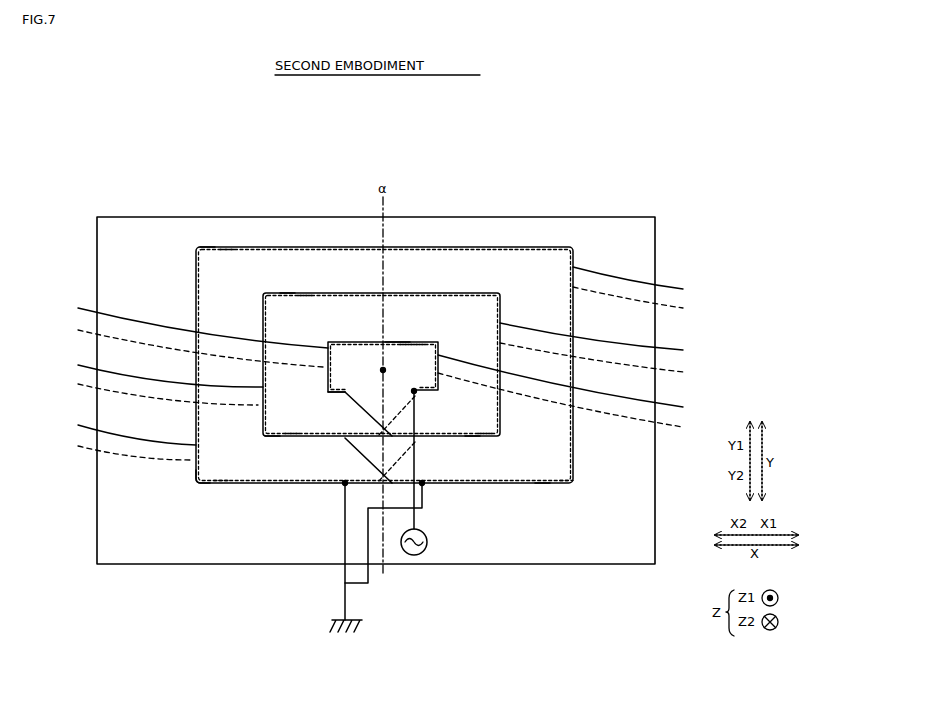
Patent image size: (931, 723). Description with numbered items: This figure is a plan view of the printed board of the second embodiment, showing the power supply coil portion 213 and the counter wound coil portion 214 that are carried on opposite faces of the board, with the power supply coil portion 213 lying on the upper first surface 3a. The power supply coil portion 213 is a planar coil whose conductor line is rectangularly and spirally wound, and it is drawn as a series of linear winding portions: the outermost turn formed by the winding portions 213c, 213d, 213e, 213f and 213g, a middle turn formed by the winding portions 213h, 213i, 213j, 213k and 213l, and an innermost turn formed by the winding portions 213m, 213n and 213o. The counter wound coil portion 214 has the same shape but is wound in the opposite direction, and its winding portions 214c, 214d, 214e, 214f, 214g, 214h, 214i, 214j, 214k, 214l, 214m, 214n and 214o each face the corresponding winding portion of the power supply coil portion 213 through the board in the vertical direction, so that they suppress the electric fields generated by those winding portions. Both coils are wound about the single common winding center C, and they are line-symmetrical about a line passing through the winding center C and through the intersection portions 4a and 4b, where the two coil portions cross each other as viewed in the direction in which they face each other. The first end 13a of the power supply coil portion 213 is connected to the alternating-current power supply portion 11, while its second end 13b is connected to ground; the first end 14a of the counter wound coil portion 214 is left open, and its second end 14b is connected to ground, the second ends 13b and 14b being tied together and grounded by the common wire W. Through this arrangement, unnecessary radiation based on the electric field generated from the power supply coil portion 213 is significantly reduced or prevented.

The first surface 3a is at (619, 232).
The power supply coil portion 213 is at (533, 240).
The counter wound coil portion 214 is at (568, 238).
The winding portion 213e is at (207, 246).
The winding portion 214e is at (228, 247).
The winding portion 213j is at (287, 292).
The winding portion 214j is at (305, 294).
The winding portion 213n is at (398, 342).
The winding portion 214n is at (412, 342).
The first end 14a is at (346, 390).
The first end 13a is at (415, 390).
The winding center C is at (392, 370).
The winding portion 213m is at (181, 323).
The winding portion 214m is at (179, 343).
The winding portion 213i is at (151, 371).
The winding portion 214i is at (149, 391).
The winding portion 213d is at (115, 431).
The winding portion 214d is at (113, 449).
The winding portion 213f is at (644, 281).
The winding portion 214f is at (644, 301).
The winding portion 213k is at (609, 340).
The winding portion 214k is at (609, 361).
The winding portion 213o is at (578, 384).
The winding portion 214o is at (578, 404).
The intersection portion 4a is at (378, 428).
The intersection portion 4b is at (392, 432).
The winding portion 213c is at (200, 486).
The winding portion 214c is at (222, 485).
The winding portion 213h is at (272, 438).
The winding portion 214h is at (293, 438).
The second end 13b is at (343, 487).
The common wire W is at (345, 620).
The alternating-current power supply portion 11 is at (413, 557).
The second end 14b is at (424, 488).
The winding portion 213l is at (472, 438).
The winding portion 214l is at (485, 438).
The winding portion 213g is at (543, 486).
The winding portion 214g is at (567, 486).